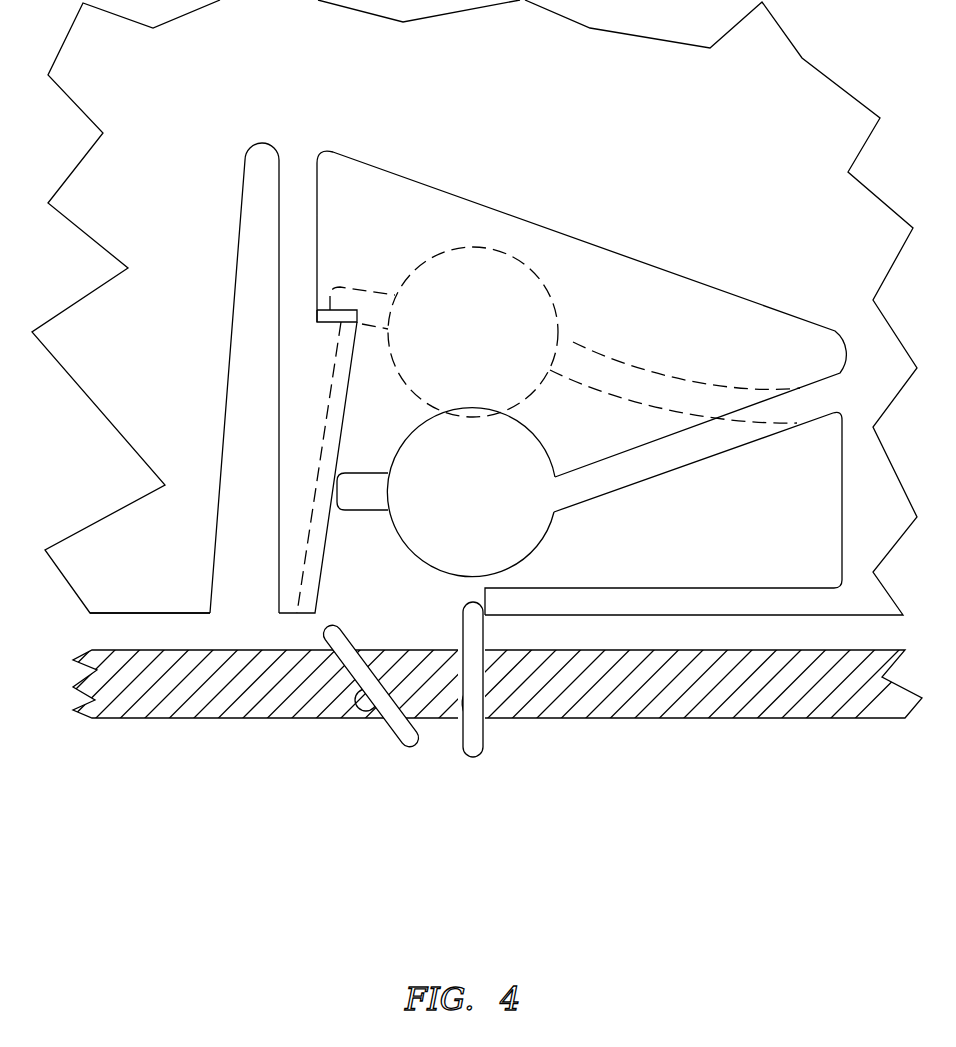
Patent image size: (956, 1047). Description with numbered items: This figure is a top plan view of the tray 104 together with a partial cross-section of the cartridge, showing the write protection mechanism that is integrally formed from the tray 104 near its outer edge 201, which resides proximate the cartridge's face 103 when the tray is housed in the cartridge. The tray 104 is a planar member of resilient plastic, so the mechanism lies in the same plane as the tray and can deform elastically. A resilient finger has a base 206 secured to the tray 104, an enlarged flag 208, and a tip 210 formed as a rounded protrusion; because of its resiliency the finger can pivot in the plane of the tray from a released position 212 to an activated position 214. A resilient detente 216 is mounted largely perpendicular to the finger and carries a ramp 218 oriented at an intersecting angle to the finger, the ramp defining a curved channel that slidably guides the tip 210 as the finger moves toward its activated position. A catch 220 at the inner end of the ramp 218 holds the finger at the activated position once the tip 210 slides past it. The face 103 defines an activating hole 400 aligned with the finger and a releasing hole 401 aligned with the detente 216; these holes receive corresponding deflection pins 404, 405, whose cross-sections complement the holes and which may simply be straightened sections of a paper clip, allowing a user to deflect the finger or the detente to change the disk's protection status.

The tray 104 is at (151, 113).
The cartridge face 103 is at (175, 697).
The outer edge 201 is at (138, 618).
The base 206 is at (683, 453).
The enlarged flag 208 is at (507, 527).
The tip 210 is at (350, 495).
The released position 212 is at (560, 470).
The activated position 214 is at (588, 342).
The resilient detente 216 is at (262, 618).
The ramp 218 is at (312, 600).
The catch 220 is at (336, 333).
The activating hole 400 is at (465, 728).
The releasing hole 401 is at (373, 712).
The deflection pin 404 is at (478, 735).
The deflection pin 405 is at (398, 730).